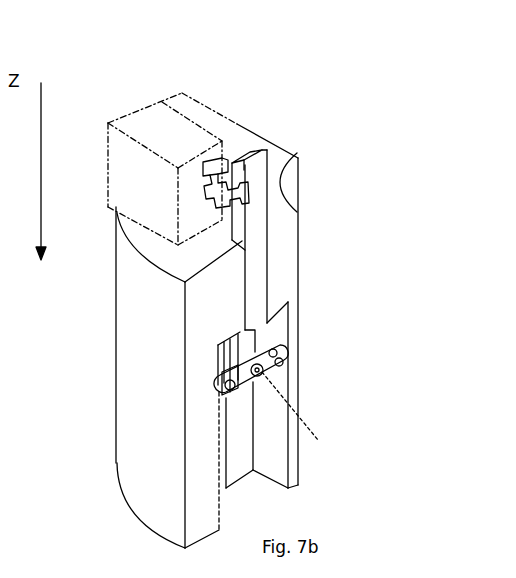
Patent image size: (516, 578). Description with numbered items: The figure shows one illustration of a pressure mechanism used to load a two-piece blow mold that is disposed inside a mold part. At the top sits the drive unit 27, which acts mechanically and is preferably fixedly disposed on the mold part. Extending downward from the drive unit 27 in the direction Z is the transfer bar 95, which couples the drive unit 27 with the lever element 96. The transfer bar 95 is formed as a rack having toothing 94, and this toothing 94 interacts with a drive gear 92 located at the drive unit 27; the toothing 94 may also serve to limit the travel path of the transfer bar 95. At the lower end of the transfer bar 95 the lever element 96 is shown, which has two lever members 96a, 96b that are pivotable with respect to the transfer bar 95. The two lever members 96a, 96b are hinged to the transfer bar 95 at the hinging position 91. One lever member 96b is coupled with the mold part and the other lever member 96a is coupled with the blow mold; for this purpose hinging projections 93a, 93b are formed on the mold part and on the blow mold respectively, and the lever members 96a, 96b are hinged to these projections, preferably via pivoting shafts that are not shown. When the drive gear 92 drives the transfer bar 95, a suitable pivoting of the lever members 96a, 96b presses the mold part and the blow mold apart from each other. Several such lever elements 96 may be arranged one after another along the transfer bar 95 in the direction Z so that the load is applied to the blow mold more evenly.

The drive unit 27 is at (152, 122).
The hinging position 91 is at (253, 377).
The drive gear 92 is at (225, 166).
The hinging projection 93a is at (285, 357).
The hinging projection 93b is at (223, 383).
The toothing 94 is at (268, 230).
The transfer bar 95 is at (255, 280).
The lever element 96 is at (257, 380).
The lever member 96a is at (283, 352).
The lever member 96b is at (223, 385).